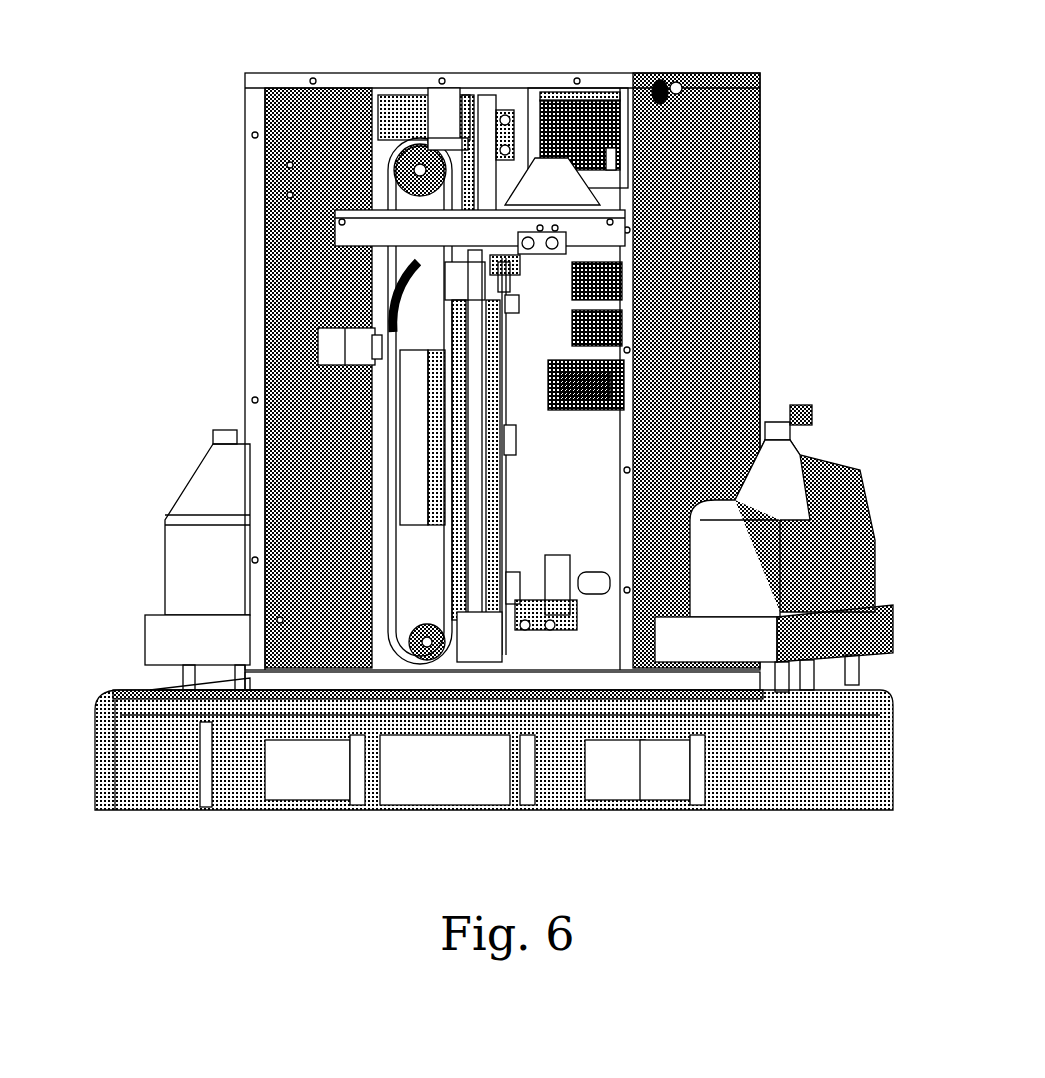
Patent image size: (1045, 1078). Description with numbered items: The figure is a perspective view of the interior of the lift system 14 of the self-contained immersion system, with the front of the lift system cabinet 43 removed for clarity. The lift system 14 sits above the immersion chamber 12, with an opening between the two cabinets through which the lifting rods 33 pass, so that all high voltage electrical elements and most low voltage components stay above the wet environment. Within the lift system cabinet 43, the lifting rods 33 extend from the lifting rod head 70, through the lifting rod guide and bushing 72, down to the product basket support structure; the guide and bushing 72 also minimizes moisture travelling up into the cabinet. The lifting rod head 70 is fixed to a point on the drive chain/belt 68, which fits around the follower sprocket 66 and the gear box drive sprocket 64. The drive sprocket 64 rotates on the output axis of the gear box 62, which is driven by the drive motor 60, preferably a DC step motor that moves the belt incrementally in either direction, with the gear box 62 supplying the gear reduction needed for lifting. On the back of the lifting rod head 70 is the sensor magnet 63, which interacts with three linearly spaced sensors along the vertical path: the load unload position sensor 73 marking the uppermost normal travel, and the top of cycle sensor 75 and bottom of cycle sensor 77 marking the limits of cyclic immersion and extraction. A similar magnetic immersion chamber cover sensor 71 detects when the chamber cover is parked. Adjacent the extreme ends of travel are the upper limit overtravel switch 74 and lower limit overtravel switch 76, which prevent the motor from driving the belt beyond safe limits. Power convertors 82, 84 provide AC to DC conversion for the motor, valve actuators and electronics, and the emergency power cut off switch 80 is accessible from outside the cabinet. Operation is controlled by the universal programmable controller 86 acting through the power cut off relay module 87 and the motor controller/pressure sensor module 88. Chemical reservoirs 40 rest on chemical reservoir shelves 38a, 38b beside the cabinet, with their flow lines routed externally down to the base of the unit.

The immersion chamber 12 is at (82, 728).
The lift system 14 is at (228, 128).
The lifting rods 33 is at (475, 555).
The chemical reservoir shelf 38a is at (150, 655).
The chemical reservoir shelf 38b is at (892, 632).
The chemical reservoirs 40 is at (160, 578).
The lift system cabinet 43 is at (722, 190).
The drive motor 60 is at (580, 130).
The gear box 62 is at (410, 115).
The sensor magnet 63 is at (498, 265).
The gear box drive sprocket 64 is at (418, 165).
The follower sprocket 66 is at (424, 630).
The drive chain/belt 68 is at (395, 292).
The lifting rod head 70 is at (462, 272).
The immersion chamber cover sensor 71 is at (616, 160).
The lifting rod guide & bushing 72 is at (470, 648).
The load unload position sensor 73 is at (512, 302).
The upper limit overtravel switch 74 is at (548, 246).
The top of cycle sensor 75 is at (514, 450).
The lower limit overtravel switch 76 is at (545, 625).
The bottom of cycle sensor 77 is at (514, 585).
The emergency power cut off switch 80 is at (342, 345).
The power convertor 82 is at (412, 402).
The power convertor 84 is at (500, 470).
The universal programmable controller 86 is at (605, 386).
The power cut off relay module 87 is at (605, 330).
The motor controller/pressure sensor module 88 is at (600, 282).